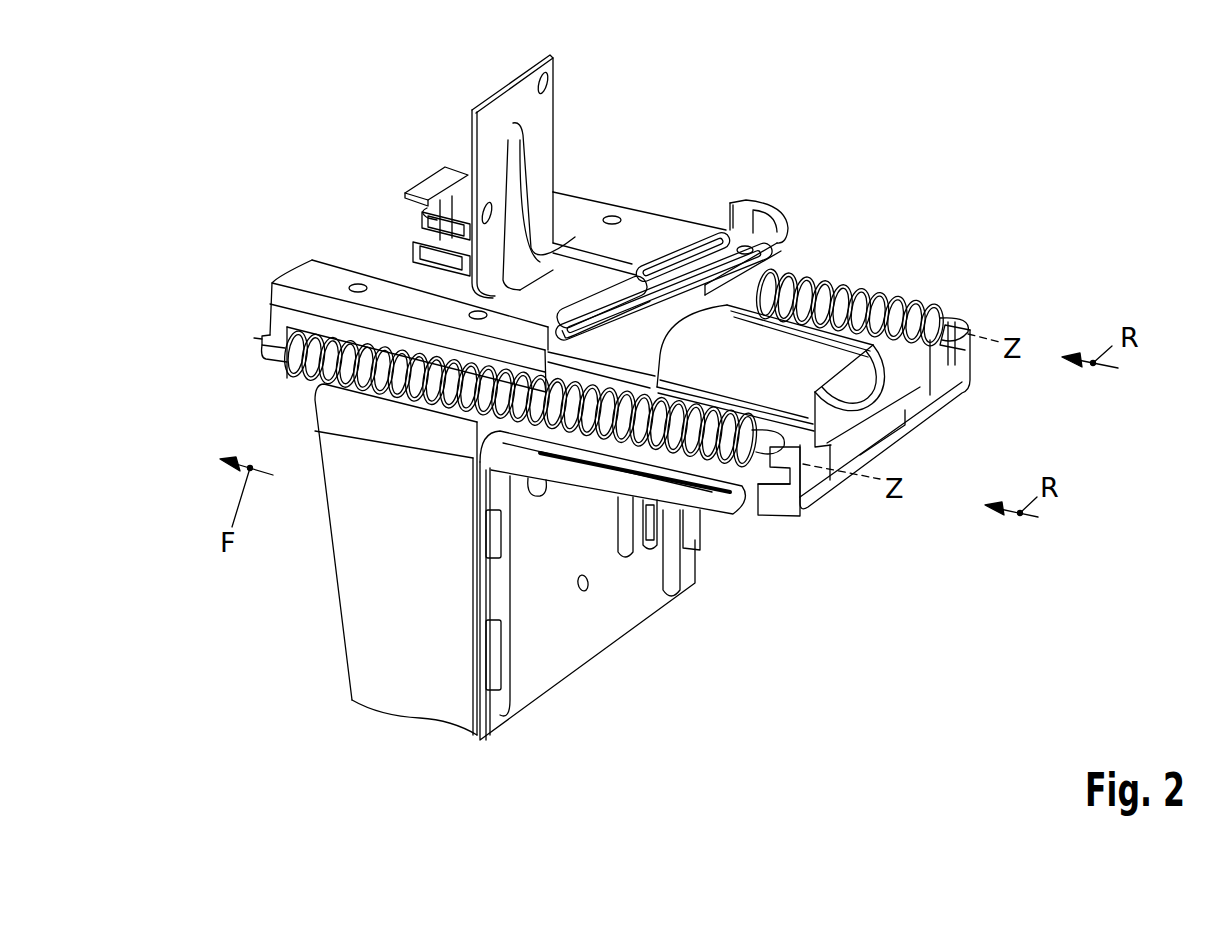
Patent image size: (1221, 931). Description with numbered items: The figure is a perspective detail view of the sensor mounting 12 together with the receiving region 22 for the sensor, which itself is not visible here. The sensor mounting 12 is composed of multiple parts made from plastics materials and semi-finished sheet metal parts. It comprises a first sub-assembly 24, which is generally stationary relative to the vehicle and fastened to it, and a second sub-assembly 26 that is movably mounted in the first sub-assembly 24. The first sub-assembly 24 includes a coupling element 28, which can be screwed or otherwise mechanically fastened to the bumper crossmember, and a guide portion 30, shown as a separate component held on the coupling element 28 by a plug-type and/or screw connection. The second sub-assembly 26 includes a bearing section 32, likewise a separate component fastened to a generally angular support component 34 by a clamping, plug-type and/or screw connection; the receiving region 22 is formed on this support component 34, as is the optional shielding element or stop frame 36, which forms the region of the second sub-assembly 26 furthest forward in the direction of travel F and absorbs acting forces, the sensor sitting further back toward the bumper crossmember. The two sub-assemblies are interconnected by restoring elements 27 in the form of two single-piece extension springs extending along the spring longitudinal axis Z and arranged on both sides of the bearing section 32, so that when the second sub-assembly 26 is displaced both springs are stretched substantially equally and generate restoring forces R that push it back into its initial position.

The sensor mounting 12 is at (722, 168).
The receiving region 22 is at (603, 615).
The first sub-assembly 24 is at (382, 152).
The second sub-assembly 26 is at (1030, 296).
The restoring elements 27 is at (730, 425).
The coupling element 28 is at (541, 122).
The guide portion 30 is at (313, 213).
The bearing section 32 is at (853, 397).
The support component 34 is at (782, 495).
The stop frame 36 is at (428, 580).